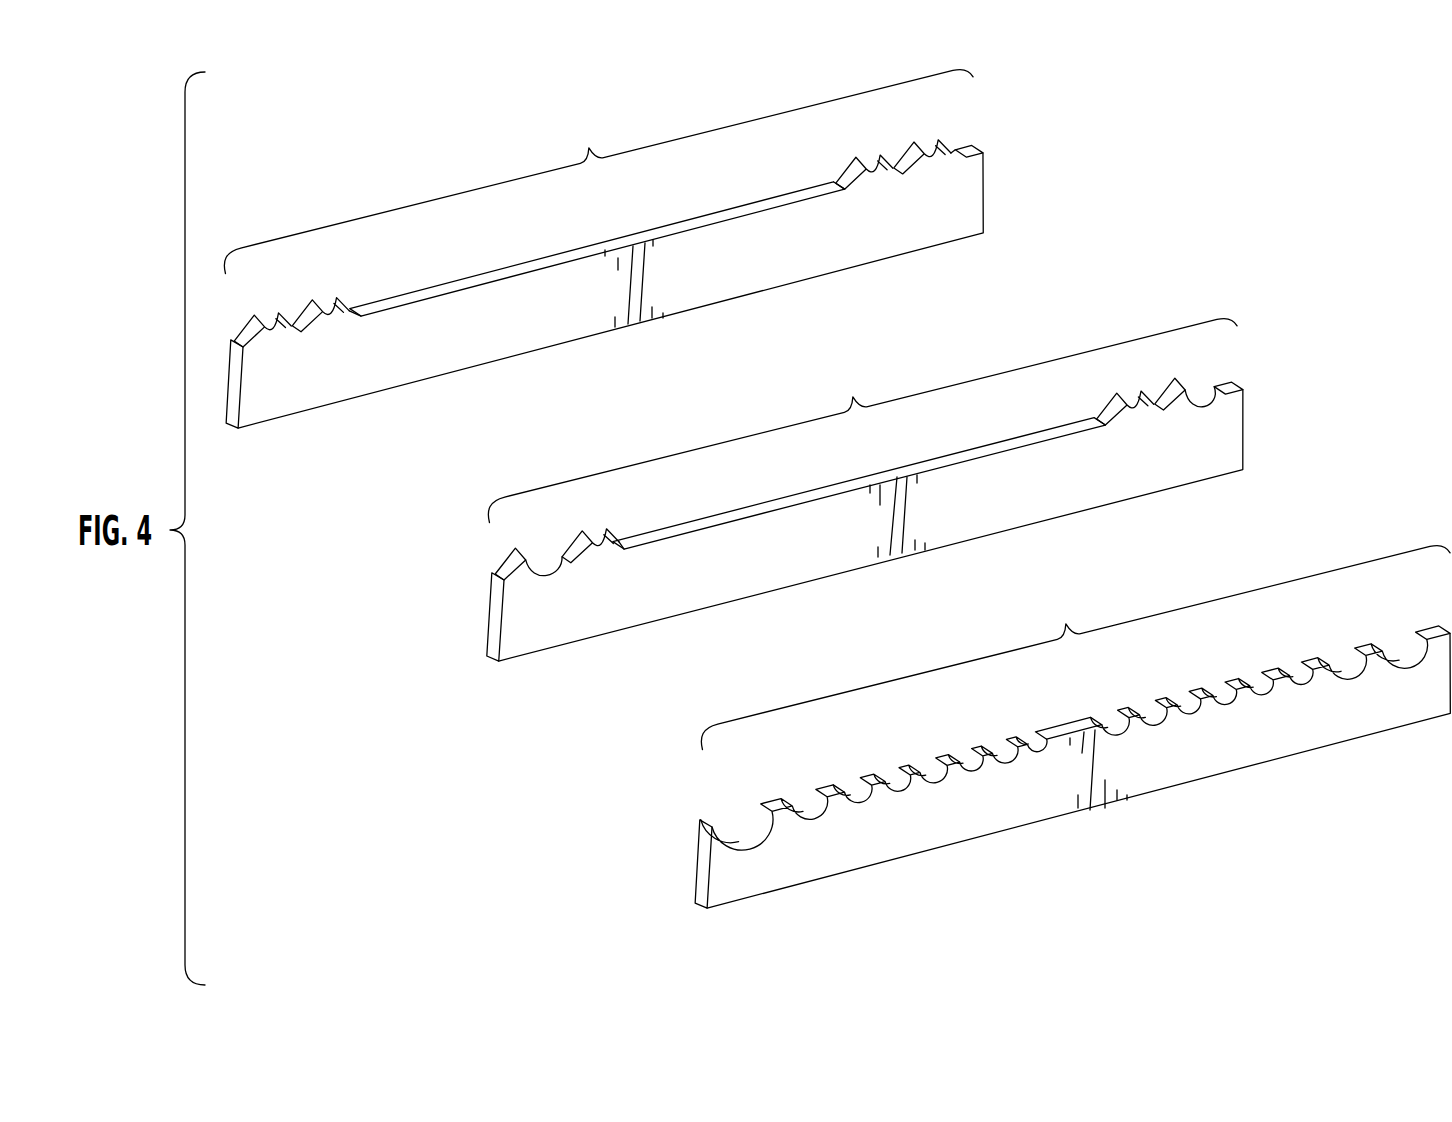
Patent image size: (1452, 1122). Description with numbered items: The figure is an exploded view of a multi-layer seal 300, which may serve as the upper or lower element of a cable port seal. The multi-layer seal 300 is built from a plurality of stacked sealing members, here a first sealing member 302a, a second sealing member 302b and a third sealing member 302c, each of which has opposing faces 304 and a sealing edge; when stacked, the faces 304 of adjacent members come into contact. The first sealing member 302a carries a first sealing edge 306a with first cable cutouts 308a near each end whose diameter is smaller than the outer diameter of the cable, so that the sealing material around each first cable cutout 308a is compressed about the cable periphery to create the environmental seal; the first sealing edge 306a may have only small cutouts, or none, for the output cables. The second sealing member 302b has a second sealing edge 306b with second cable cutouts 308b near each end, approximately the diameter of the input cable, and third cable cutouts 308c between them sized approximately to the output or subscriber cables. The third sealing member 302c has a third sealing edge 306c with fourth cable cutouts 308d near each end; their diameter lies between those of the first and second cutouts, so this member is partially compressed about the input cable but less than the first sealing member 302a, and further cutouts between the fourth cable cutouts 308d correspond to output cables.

The multi-layer seal 300 is at (420, 778).
The first sealing member 302a is at (320, 424).
The second sealing member 302b is at (754, 896).
The third sealing member 302c is at (507, 646).
The opposing faces 304 is at (569, 328).
The first sealing edge 306a is at (596, 164).
The second sealing edge 306b is at (1073, 640).
The third sealing edge 306c is at (860, 413).
The first cable cutout 308a is at (405, 301).
The second cable cutout 308b is at (738, 818).
The third cable cutout 308c is at (922, 766).
The fourth cable cutout 308d is at (540, 574).